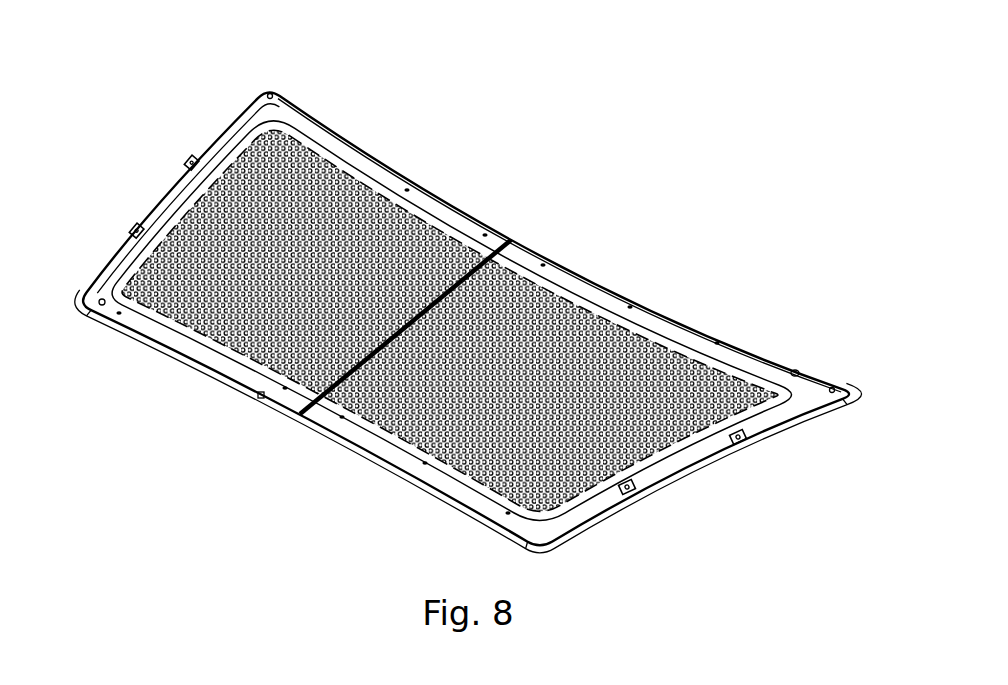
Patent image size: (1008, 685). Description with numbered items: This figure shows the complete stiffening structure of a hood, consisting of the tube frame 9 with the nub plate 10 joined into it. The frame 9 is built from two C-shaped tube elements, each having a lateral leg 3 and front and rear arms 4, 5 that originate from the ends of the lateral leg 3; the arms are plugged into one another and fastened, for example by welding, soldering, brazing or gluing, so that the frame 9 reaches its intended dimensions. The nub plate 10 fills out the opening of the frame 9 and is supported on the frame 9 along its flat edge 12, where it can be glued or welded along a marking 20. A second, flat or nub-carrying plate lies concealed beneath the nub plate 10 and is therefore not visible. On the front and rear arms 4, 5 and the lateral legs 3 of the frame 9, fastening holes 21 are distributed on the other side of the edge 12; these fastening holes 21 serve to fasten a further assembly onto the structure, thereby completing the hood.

The frame 9 is at (452, 290).
The lateral leg 3 is at (108, 255).
The front arm 4 is at (311, 410).
The rear arm 5 is at (467, 210).
The nub plate 10 is at (301, 181).
The flat edge 12 is at (380, 184).
The marking 20 is at (571, 291).
The fastening holes 21 is at (136, 229).